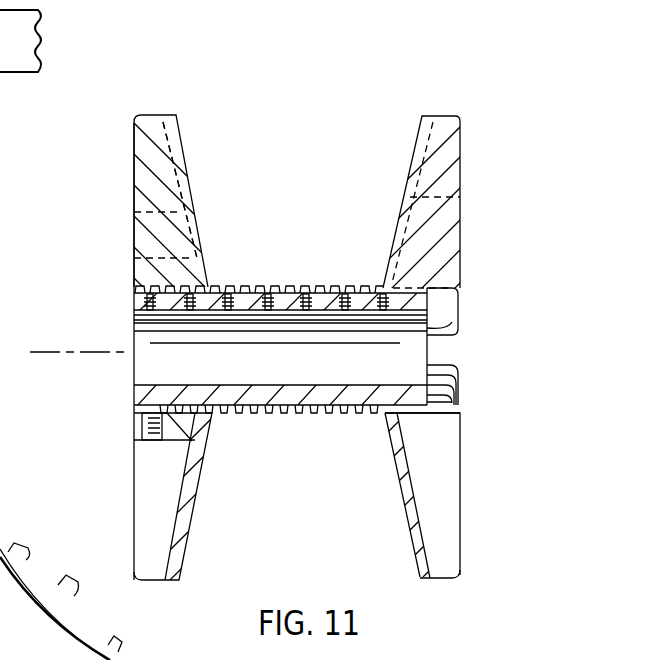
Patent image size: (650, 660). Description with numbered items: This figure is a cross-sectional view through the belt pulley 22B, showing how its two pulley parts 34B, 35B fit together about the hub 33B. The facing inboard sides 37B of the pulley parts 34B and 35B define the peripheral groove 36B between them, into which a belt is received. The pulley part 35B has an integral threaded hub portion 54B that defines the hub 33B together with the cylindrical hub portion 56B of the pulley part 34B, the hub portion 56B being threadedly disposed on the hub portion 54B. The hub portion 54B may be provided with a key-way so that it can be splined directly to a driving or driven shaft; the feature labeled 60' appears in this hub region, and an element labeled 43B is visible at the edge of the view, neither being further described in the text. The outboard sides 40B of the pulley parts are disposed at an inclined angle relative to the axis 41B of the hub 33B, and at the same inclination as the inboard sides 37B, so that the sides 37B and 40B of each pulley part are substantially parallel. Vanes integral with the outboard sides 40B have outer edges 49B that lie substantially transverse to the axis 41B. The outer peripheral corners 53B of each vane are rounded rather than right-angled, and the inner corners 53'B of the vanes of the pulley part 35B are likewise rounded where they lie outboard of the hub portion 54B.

The belt pulley 22B is at (455, 86).
The peripheral groove 36B is at (295, 334).
The outer peripheral corners 53B is at (460, 118).
The inner corners 53'B is at (473, 315).
The outer edges 49B is at (134, 173).
The outboard sides 40B is at (134, 212).
The hub portion 54B is at (350, 286).
The ring 60' is at (239, 316).
The axis 41B is at (105, 352).
The hub portion 56B is at (131, 432).
The hub 33B is at (337, 417).
The facing sides 37B is at (187, 525).
The pulley part 34B is at (182, 554).
The pulley part 35B is at (416, 563).
The adjacent gear 43B is at (61, 601).